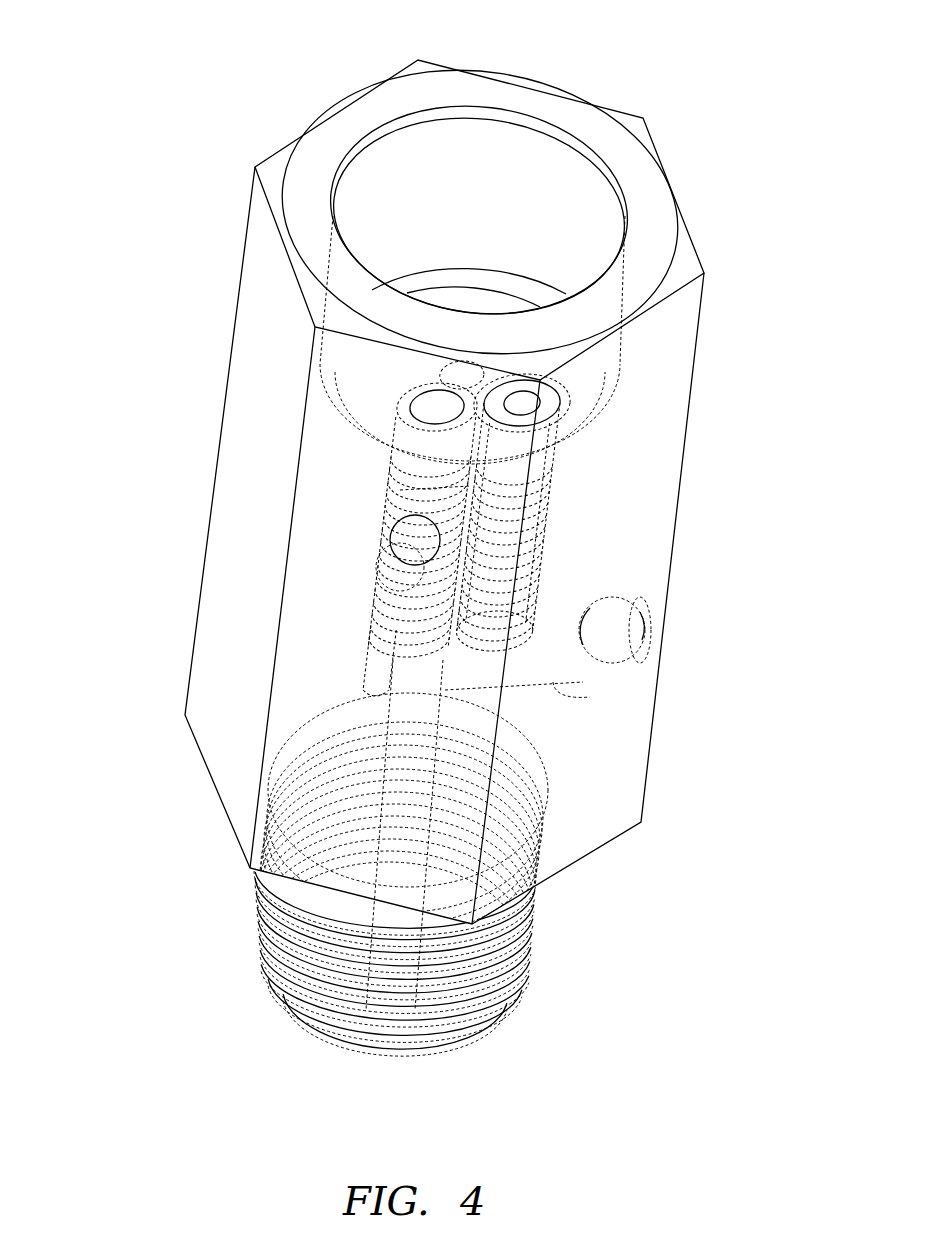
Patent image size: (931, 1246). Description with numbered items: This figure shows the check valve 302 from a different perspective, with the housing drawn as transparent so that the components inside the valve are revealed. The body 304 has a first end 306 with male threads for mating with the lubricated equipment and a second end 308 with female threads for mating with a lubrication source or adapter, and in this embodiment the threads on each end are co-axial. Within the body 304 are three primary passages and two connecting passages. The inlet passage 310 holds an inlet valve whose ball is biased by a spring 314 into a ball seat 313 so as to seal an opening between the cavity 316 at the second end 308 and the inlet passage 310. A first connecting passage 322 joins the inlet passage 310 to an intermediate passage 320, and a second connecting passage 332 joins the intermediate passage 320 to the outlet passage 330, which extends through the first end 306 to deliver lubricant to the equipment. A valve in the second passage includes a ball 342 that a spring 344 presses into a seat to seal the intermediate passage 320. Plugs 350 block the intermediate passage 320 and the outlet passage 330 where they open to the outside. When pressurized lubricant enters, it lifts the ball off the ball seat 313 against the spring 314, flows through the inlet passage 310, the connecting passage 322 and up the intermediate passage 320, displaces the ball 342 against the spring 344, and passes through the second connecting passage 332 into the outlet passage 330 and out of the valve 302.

The check valve 302 is at (177, 53).
The body 304 is at (703, 320).
The first end 306 is at (528, 948).
The second end 308 is at (613, 162).
The inlet passage 310 is at (540, 573).
The ball seat 313 is at (573, 447).
The spring 314 is at (540, 520).
The cavity 316 is at (568, 247).
The intermediate passage 320 is at (413, 467).
The first connecting passage 322 is at (585, 682).
The outlet passage 330 is at (433, 777).
The second connecting passage 332 is at (403, 533).
The ball 342 is at (385, 615).
The spring 344 is at (403, 507).
The plugs 350 is at (612, 627).